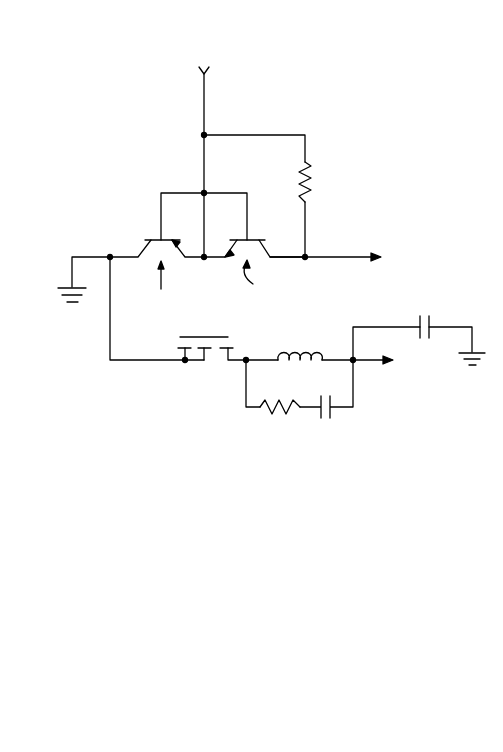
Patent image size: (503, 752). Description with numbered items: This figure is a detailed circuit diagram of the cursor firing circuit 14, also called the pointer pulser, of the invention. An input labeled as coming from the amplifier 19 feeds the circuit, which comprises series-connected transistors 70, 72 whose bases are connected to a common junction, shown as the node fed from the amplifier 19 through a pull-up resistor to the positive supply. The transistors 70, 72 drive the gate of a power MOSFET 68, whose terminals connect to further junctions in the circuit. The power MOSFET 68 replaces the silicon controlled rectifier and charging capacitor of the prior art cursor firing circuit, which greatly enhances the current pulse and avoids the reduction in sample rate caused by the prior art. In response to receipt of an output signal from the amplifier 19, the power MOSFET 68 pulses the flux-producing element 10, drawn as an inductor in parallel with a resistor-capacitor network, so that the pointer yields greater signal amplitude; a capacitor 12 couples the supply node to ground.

The cursor firing circuit 14 is at (356, 118).
The amplifier 19 is at (200, 142).
The transistor 70 is at (158, 237).
The transistor 72 is at (252, 237).
The power MOSFET 68 is at (213, 373).
The flux-producing element 10 is at (306, 354).
The capacitor (4.7 microfarad) 12 is at (419, 317).